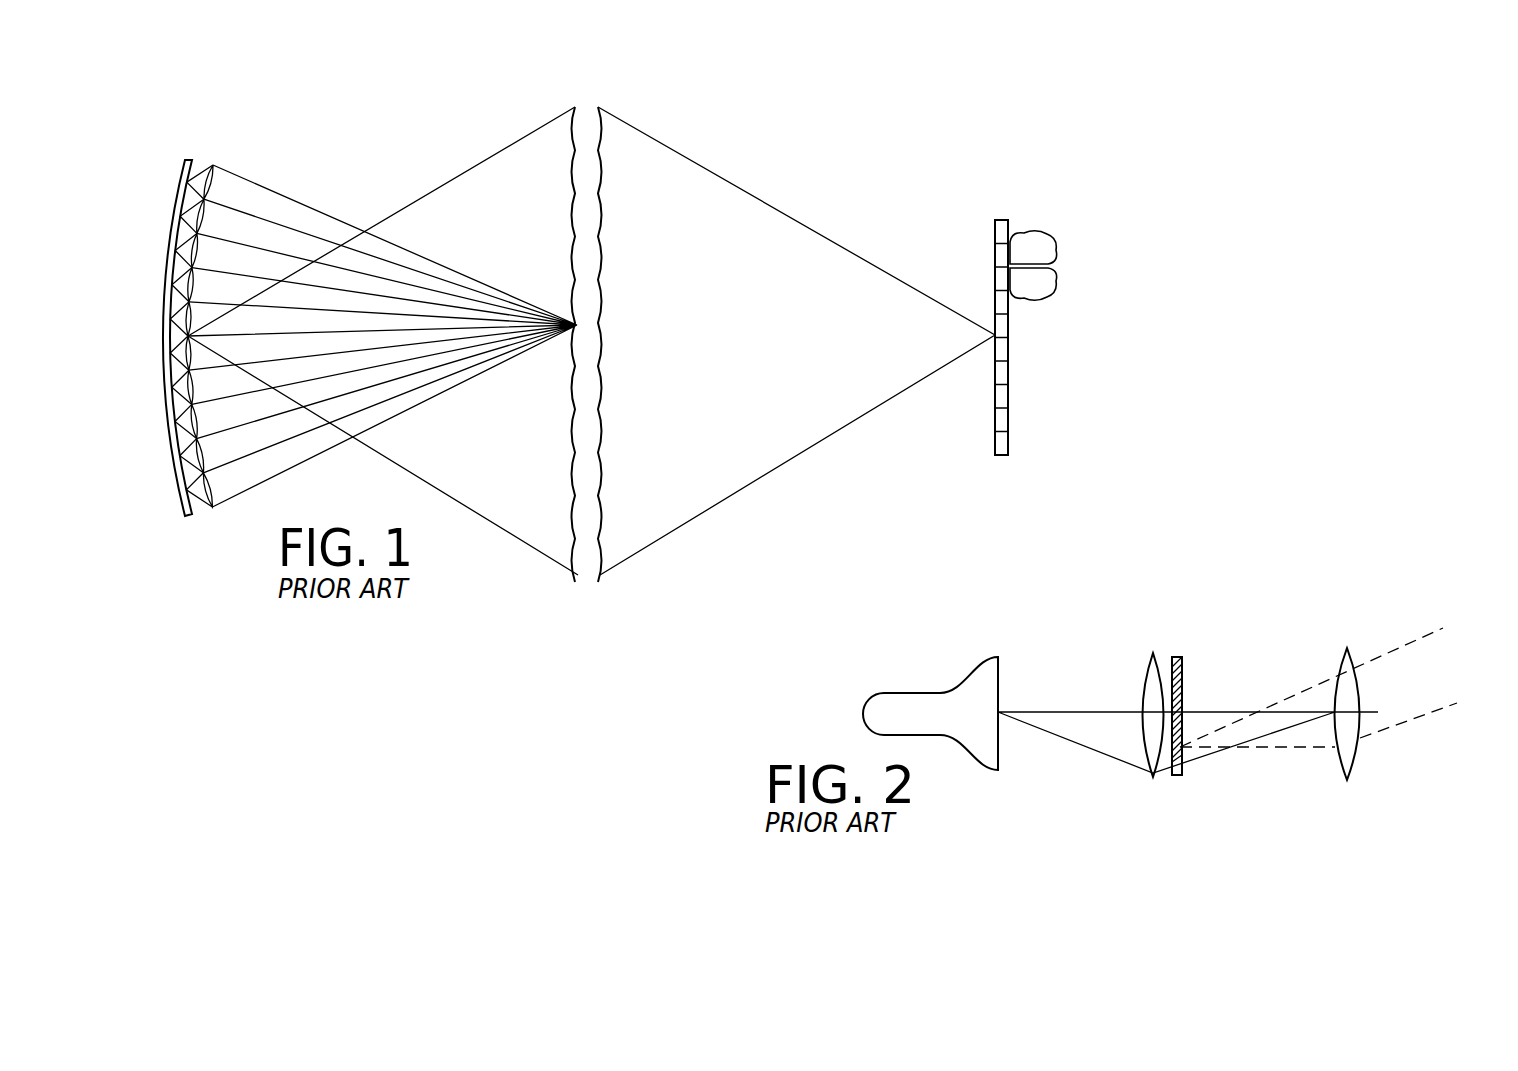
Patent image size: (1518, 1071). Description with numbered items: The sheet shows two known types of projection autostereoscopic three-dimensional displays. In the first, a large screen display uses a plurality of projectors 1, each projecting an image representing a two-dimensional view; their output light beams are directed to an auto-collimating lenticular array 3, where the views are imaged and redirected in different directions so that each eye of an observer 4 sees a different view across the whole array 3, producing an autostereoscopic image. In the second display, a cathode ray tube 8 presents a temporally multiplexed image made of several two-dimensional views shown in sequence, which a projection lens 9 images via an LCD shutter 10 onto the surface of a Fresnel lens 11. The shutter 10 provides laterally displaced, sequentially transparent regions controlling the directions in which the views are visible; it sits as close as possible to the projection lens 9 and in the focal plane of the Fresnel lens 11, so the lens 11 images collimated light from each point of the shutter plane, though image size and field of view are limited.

In FIG. 1, the projector 1 is at (187, 162).
In FIG. 1, the auto-collimating lenticular array 3 is at (632, 70).
In FIG. 1, the observer 4 is at (1037, 232).
In FIG. 2, the cathode ray tube 8 is at (932, 693).
In FIG. 2, the projection lens 9 is at (1142, 670).
In FIG. 2, the LCD shutter 10 is at (1182, 775).
In FIG. 2, the Fresnel lens 11 is at (1345, 650).